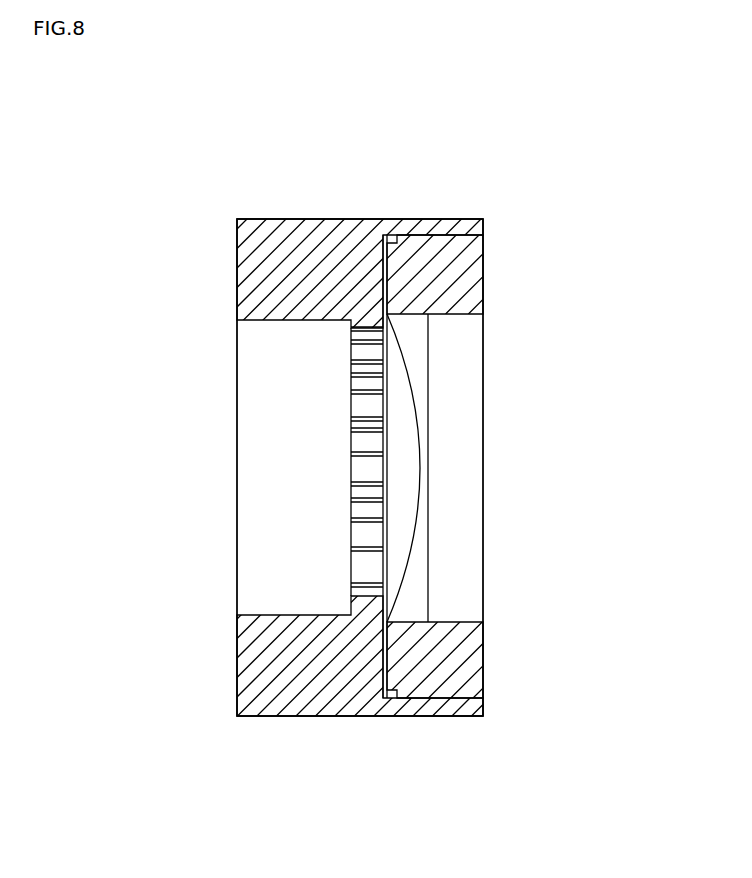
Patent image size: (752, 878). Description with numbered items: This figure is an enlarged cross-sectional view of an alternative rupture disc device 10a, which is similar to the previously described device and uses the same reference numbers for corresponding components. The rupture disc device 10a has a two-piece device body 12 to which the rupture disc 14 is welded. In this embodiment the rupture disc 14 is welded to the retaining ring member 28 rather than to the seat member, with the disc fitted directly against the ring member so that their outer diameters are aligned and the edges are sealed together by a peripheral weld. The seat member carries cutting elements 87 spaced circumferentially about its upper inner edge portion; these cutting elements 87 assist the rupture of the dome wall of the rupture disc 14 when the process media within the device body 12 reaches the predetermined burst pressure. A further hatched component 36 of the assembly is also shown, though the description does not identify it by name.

The rupture disc device 10a is at (582, 127).
The device body 12 is at (328, 732).
The magnet block 36 is at (258, 267).
The retaining ring member 28 is at (468, 272).
The cutting elements 87 is at (352, 440).
The rupture disc 14 is at (420, 587).